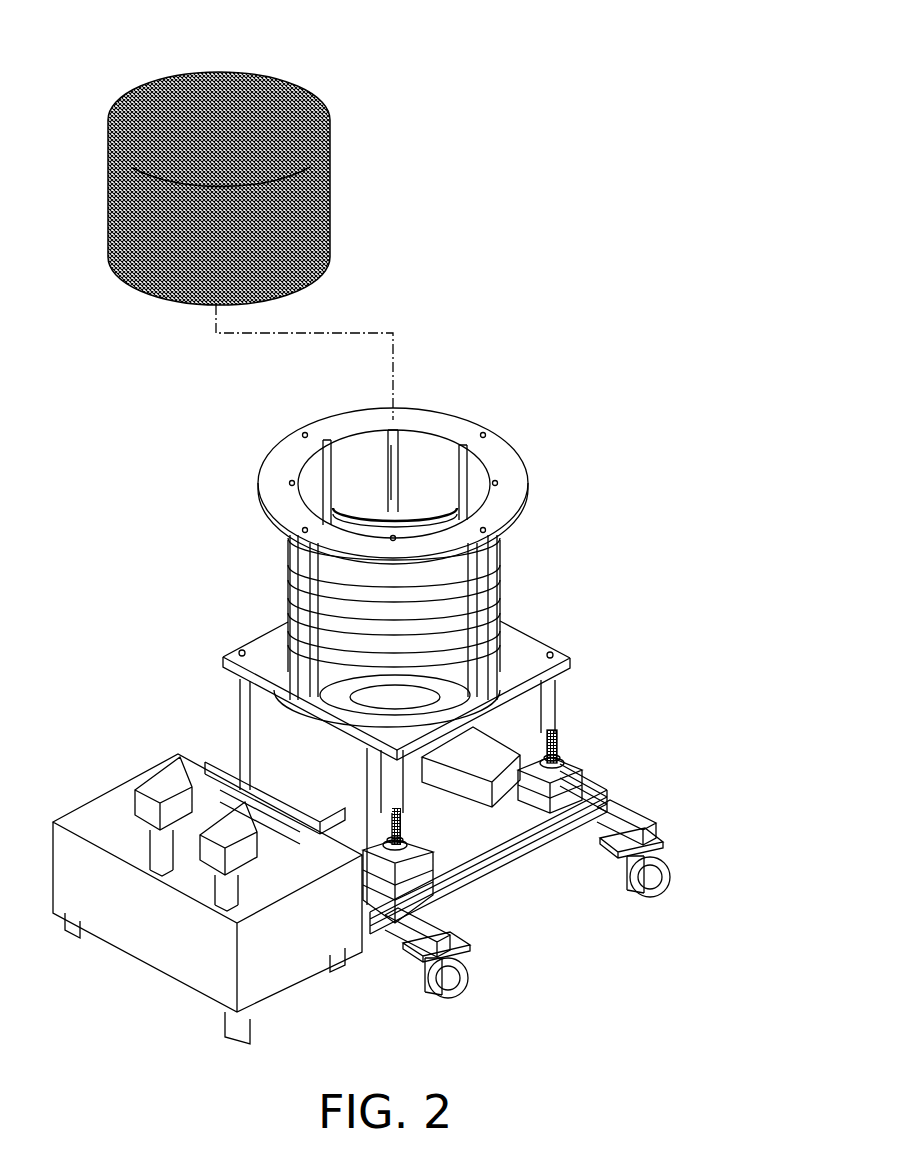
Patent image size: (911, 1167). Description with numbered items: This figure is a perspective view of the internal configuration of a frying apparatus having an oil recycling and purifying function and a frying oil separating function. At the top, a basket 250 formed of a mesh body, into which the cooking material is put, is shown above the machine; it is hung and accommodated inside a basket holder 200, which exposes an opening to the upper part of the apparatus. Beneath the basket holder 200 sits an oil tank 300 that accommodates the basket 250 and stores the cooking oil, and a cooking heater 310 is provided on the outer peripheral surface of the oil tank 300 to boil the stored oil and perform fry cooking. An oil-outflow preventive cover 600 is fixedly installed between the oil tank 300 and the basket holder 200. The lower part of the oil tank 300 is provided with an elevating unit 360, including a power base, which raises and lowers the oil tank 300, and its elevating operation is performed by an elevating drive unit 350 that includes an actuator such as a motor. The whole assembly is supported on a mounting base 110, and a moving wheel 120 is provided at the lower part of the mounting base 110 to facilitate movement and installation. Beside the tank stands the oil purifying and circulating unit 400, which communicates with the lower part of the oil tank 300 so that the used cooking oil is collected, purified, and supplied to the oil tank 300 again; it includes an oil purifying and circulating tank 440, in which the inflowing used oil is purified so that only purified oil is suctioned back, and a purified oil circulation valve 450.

The mounting base 110 is at (608, 793).
The moving wheel 120 is at (673, 880).
The basket holder 200 is at (380, 526).
The basket 250 is at (160, 83).
The oil tank 300 is at (353, 670).
The cooking heater 310 is at (373, 602).
The elevating drive unit 350 is at (475, 762).
The elevating unit 360 is at (400, 820).
The oil purifying and circulating unit 400 is at (202, 845).
The oil purifying and circulating tank 440 is at (165, 947).
The purified oil circulation valve 450 is at (227, 827).
The oil-outflow preventive cover 600 is at (423, 463).